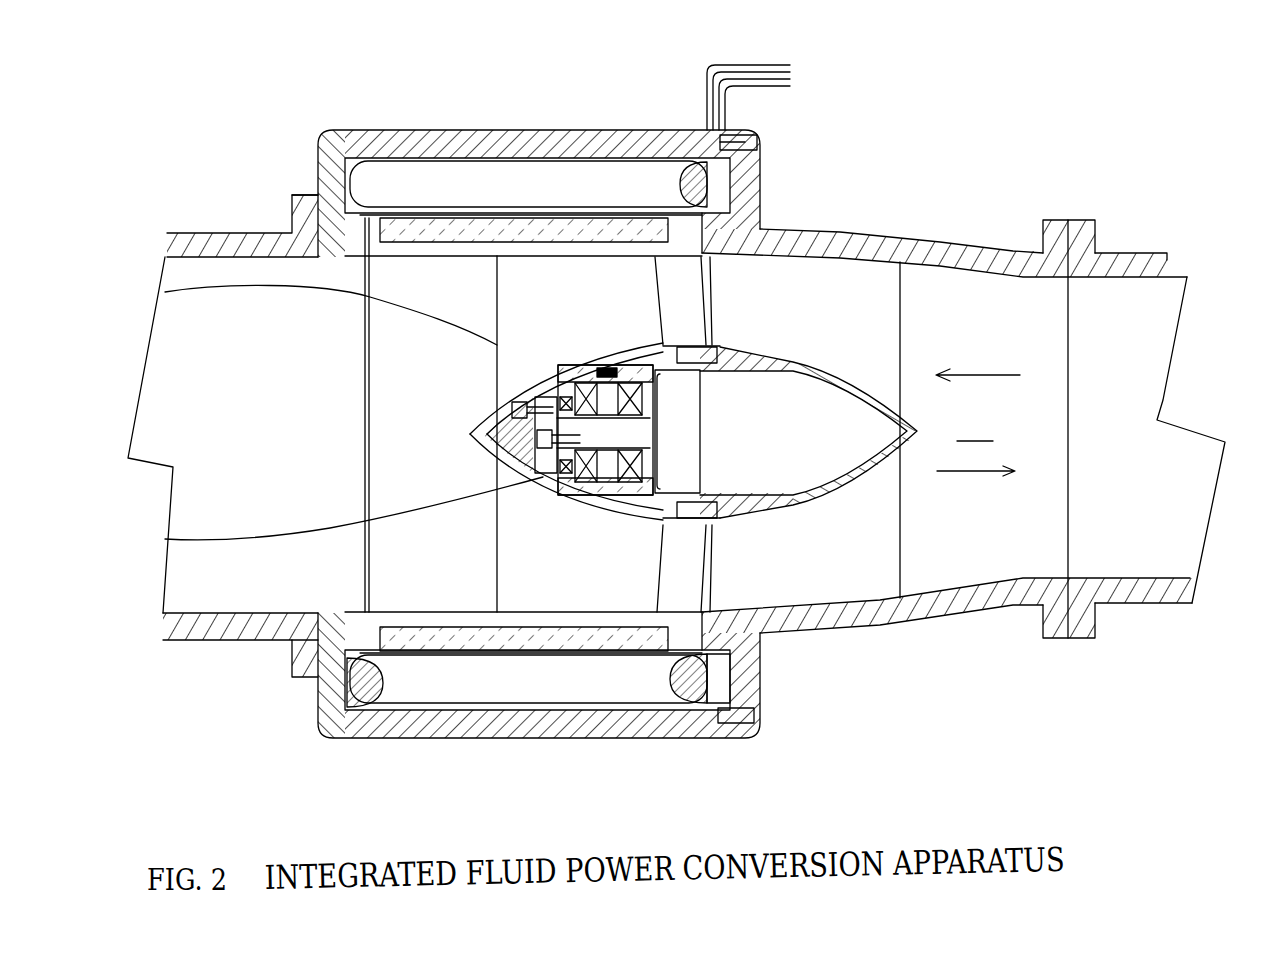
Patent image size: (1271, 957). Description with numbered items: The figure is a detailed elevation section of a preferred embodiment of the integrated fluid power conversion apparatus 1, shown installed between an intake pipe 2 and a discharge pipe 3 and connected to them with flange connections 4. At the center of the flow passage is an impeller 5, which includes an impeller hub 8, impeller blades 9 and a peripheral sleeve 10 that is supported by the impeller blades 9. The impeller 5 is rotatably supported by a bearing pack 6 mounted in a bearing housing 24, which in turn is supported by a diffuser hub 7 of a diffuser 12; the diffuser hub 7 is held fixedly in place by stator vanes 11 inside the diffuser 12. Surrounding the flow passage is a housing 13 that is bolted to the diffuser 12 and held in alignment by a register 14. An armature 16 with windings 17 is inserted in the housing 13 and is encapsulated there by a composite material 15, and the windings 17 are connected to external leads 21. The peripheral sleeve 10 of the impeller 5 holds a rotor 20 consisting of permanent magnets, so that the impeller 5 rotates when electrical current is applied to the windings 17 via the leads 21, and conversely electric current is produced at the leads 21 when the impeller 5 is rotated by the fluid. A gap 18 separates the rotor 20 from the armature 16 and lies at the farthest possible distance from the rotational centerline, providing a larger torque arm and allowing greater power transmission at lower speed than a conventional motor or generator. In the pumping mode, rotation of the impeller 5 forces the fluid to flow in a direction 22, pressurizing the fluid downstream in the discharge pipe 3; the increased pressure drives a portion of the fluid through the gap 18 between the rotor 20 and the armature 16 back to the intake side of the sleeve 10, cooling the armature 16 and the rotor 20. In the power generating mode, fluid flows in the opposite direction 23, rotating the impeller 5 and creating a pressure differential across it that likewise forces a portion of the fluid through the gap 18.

The power conversion apparatus 1 is at (516, 112).
The intake pipe 2 is at (249, 349).
The discharge pipe 3 is at (1131, 353).
The flange connections 4 is at (318, 197).
The impeller 5 is at (165, 292).
The bearing pack 6 is at (700, 402).
The diffuser hub 7 is at (717, 367).
The impeller hub 8 is at (165, 540).
The impeller blades 9 is at (578, 329).
The peripheral sleeve 10 is at (410, 620).
The stator vanes 11 is at (756, 318).
The diffuser 12 is at (858, 636).
The housing 13 is at (552, 130).
The register 14 is at (748, 206).
The composite material 15 is at (717, 688).
The armature 16 is at (551, 205).
The windings 17 is at (695, 680).
The gap 18 is at (552, 655).
The rotor 20 is at (437, 640).
The leads 21 is at (793, 63).
The direction 22 is at (976, 440).
The direction 23 is at (978, 362).
The bearing housing 24 is at (700, 487).